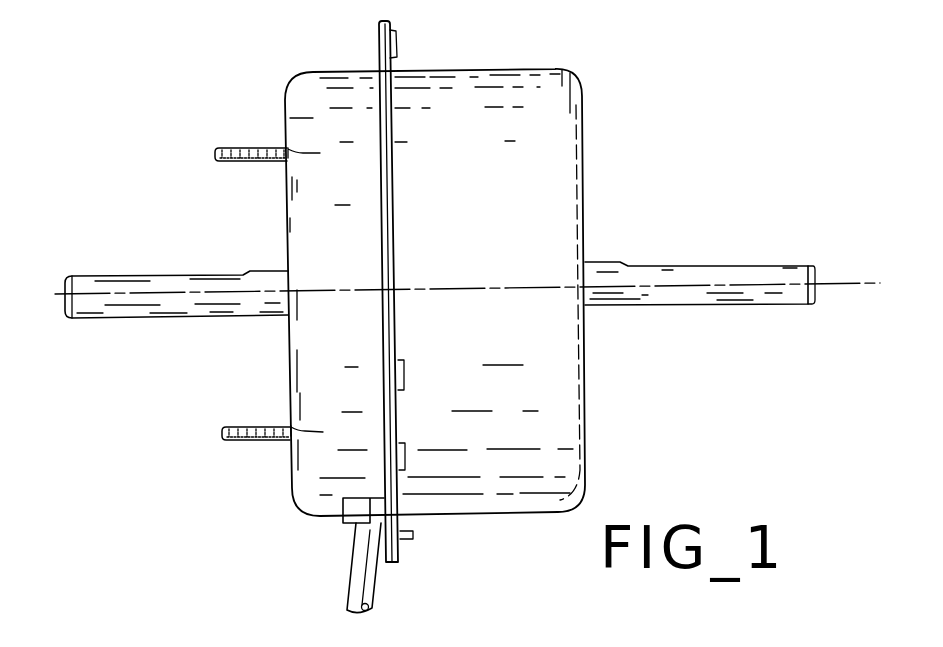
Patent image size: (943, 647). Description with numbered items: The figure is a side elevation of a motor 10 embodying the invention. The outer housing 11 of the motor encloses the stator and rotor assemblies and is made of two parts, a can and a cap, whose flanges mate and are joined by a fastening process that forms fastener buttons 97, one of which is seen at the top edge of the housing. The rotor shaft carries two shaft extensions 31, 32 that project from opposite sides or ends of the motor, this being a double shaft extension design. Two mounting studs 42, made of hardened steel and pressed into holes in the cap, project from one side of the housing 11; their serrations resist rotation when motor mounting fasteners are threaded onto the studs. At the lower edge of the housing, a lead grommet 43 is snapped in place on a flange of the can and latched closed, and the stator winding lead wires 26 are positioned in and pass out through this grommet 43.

The motor 10 is at (478, 67).
The housing 11 is at (368, 50).
The fastener button 97 is at (398, 42).
The shaft extension 31 is at (145, 318).
The shaft extension 32 is at (780, 305).
The mounting stud 42 is at (245, 162).
The lead grommet 43 is at (347, 520).
The lead wire 26 is at (377, 582).